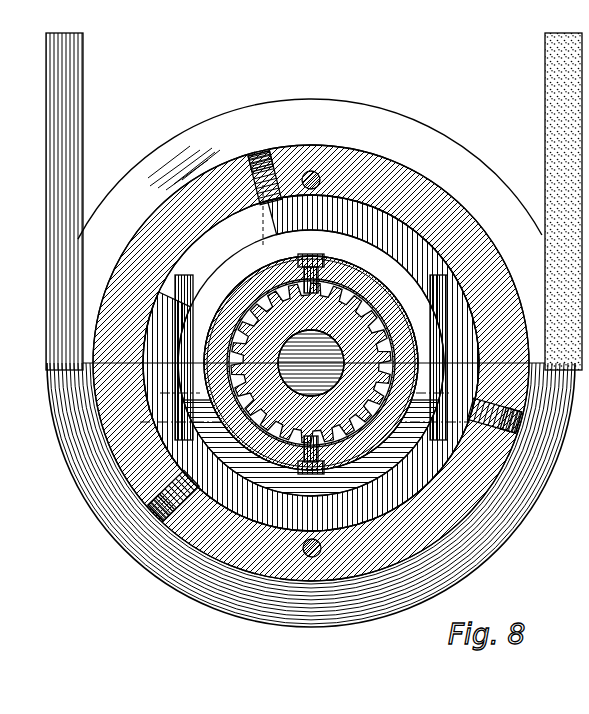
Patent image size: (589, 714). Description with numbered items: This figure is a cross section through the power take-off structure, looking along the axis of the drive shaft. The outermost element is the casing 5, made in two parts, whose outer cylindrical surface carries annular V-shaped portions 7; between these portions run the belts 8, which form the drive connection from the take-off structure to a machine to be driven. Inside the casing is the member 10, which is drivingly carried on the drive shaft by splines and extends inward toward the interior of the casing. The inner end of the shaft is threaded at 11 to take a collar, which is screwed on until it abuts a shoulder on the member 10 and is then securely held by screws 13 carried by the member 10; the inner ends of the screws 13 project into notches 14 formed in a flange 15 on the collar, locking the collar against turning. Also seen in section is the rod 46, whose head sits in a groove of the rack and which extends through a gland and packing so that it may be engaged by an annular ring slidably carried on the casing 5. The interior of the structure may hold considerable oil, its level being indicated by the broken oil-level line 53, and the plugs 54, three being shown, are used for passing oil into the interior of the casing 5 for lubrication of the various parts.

The casing 5 is at (435, 190).
The annular V-shaped portions 7 is at (132, 216).
The belts 8 is at (46, 186).
The member 10 is at (380, 280).
The threaded portion of shaft 11 is at (383, 306).
The screws 13 is at (316, 255).
The notches 14 is at (279, 272).
The flange 15 is at (246, 308).
The rod 46 is at (320, 166).
The oil-level line 53 is at (162, 412).
The plugs 54 is at (268, 162).